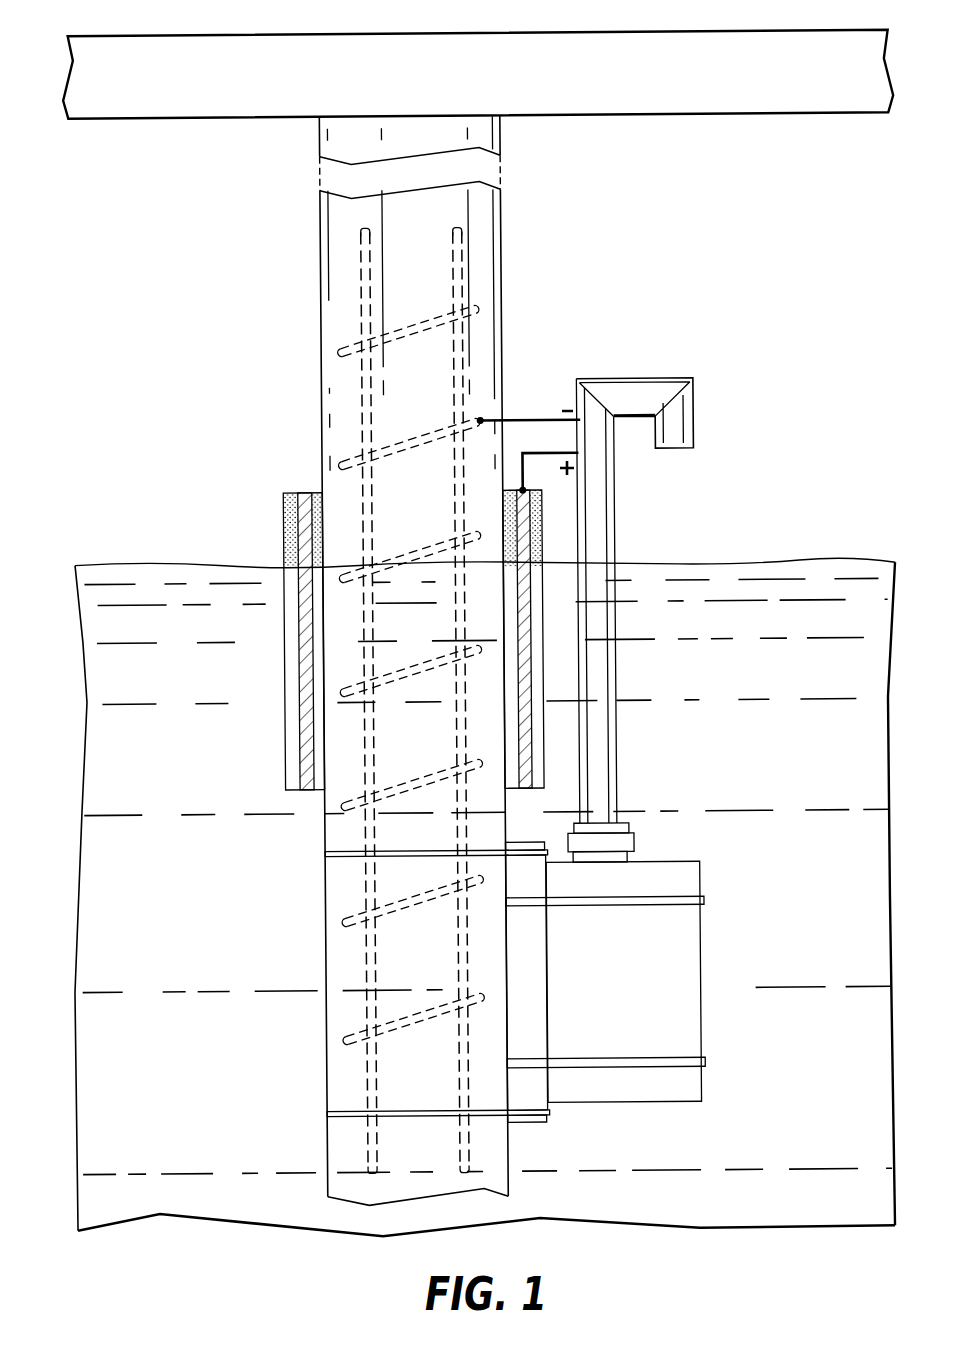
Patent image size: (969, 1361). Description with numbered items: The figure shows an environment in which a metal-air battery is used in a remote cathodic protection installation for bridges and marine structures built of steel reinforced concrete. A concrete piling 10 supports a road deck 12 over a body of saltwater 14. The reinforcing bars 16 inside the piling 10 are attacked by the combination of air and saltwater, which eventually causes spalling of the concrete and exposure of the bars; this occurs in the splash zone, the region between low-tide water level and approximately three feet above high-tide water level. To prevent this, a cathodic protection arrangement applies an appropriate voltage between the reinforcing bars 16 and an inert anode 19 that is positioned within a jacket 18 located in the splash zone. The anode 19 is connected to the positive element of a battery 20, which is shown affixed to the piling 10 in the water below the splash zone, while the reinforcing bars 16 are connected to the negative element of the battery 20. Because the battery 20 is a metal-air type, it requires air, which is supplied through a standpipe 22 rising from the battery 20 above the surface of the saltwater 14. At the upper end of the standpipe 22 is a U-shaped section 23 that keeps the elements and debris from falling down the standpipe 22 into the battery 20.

The road deck 12 is at (755, 32).
The concrete piling 10 is at (500, 247).
The reinforcing bars 16 is at (462, 350).
The body of saltwater 14 is at (808, 563).
The anode 19 is at (300, 513).
The jacket 18 is at (283, 548).
The standpipe 22 is at (608, 552).
The U-shaped section 23 is at (648, 388).
The battery 20 is at (702, 980).